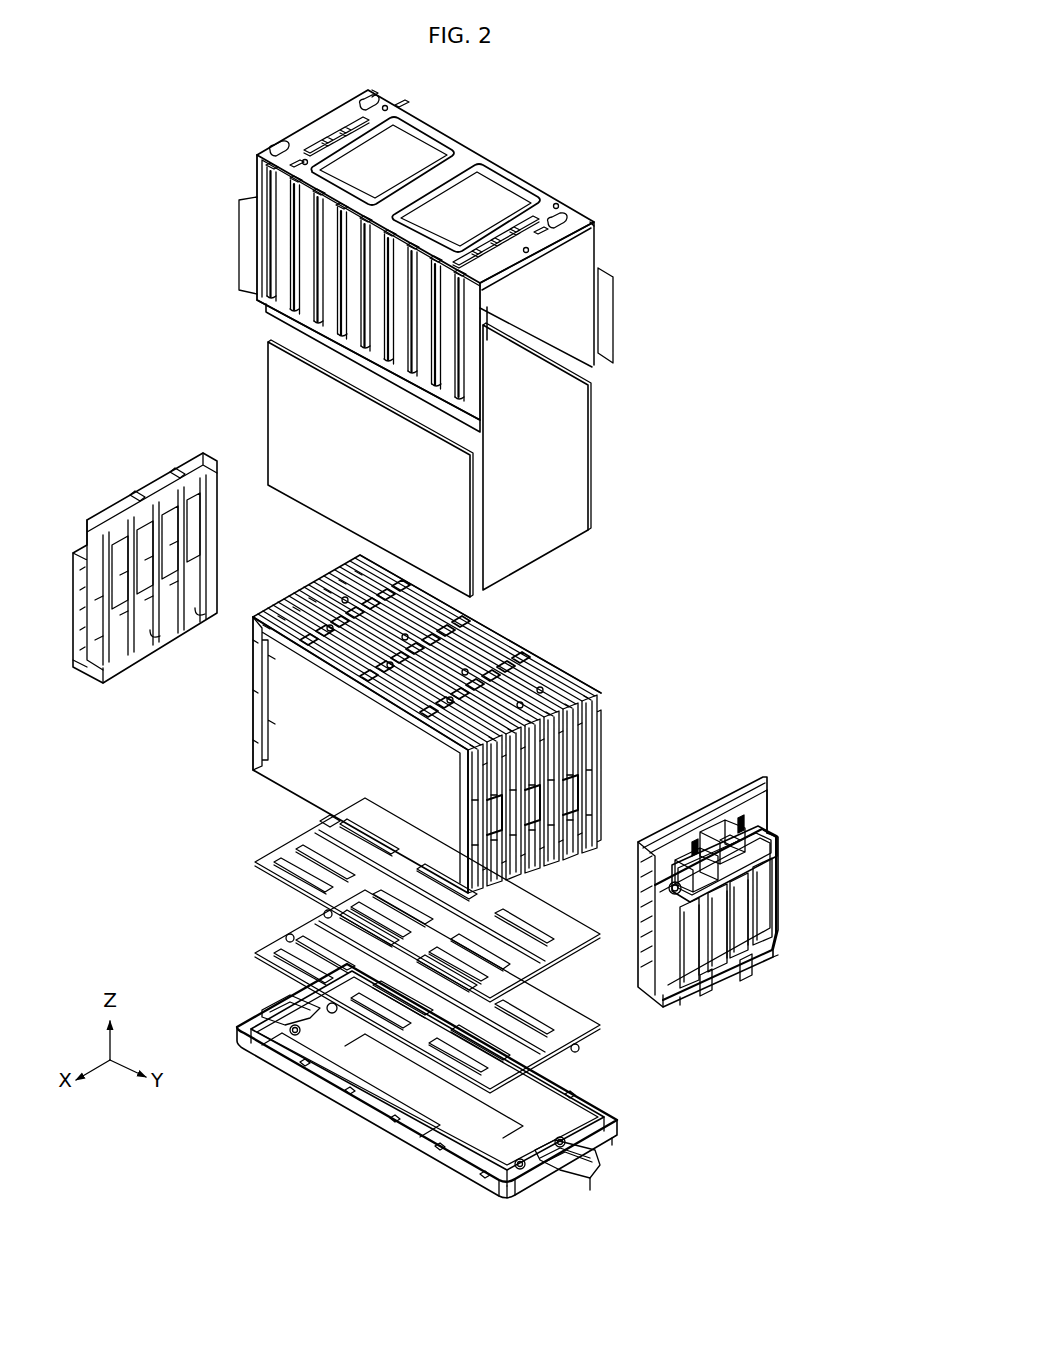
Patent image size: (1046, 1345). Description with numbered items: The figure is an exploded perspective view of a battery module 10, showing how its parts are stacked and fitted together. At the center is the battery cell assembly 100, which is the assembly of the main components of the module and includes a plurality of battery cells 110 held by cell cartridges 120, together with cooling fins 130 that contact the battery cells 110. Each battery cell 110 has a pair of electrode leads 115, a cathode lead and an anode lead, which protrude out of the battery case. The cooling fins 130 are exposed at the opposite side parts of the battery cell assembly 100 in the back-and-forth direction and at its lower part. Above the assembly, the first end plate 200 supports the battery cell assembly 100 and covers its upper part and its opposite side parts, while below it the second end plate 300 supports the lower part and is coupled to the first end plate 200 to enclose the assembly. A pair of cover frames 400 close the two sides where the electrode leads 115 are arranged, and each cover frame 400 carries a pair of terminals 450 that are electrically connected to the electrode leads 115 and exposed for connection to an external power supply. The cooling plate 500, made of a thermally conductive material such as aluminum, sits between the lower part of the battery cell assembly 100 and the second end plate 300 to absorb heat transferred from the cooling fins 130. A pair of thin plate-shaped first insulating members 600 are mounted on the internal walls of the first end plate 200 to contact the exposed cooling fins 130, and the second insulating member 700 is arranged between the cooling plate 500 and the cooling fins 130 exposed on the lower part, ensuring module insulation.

The battery module 10 is at (161, 146).
The battery cell assembly 100 is at (238, 736).
The battery cell 110 is at (600, 716).
The electrode lead 115 is at (600, 770).
The cell cartridge 120 is at (575, 682).
The cooling fin 130 is at (290, 779).
The first end plate 200 is at (549, 125).
The second end plate 300 is at (312, 1110).
The cover frame 400 is at (166, 661).
The terminal 450 is at (740, 822).
The cooling plate 500 is at (252, 937).
The first insulating member 600 is at (609, 442).
The second insulating member 700 is at (252, 872).